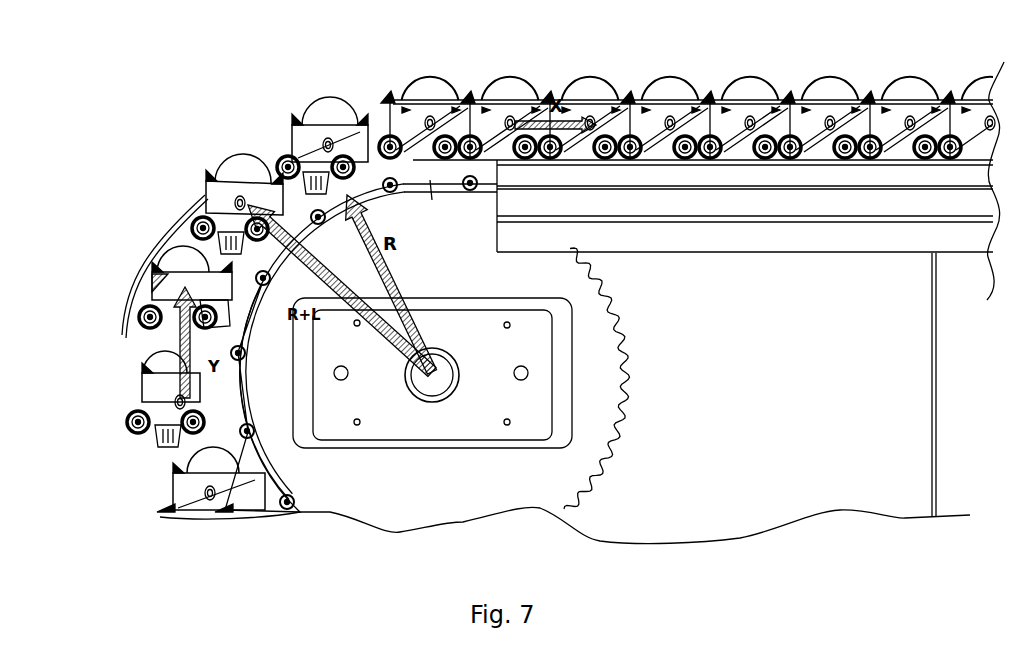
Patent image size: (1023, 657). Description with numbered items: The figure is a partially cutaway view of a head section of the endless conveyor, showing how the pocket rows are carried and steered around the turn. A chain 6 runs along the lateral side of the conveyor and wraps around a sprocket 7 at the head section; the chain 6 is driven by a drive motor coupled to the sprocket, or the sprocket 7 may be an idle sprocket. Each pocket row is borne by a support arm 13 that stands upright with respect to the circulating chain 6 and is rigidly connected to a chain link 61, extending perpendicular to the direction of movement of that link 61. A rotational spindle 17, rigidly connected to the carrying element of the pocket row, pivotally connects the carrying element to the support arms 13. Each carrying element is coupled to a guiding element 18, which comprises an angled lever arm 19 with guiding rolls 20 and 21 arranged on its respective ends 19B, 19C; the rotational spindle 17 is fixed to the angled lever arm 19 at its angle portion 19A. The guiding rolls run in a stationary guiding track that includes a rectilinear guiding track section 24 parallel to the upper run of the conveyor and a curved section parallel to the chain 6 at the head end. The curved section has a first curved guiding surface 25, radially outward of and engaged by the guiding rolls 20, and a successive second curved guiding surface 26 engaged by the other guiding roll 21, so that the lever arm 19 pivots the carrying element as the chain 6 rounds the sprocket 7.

The chain 6 is at (403, 206).
The sprocket 7 is at (593, 363).
The support arm 13 is at (186, 310).
The rotational spindle 17 is at (348, 142).
The guiding element 18 is at (657, 153).
The angled lever arm 19 is at (167, 410).
The angle portion 19A is at (325, 143).
The end of angled lever arm 19B is at (287, 157).
The end of angled lever arm 19C is at (360, 112).
The guiding roll 20 is at (137, 433).
The guiding roll 21 is at (197, 446).
The rectilinear guiding track section 24 is at (740, 166).
The first curved guiding surface 25 is at (173, 268).
The second curved guiding surface 26 is at (177, 507).
The chain link 61 is at (436, 178).